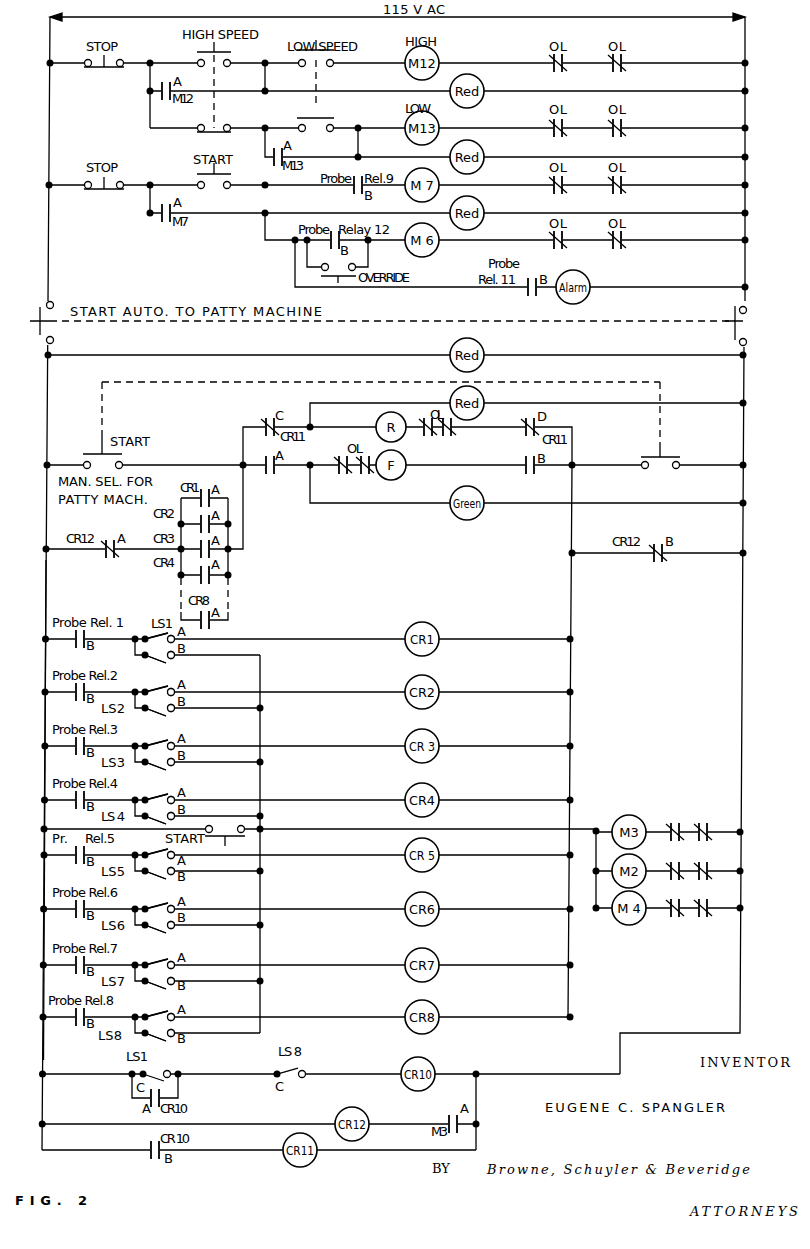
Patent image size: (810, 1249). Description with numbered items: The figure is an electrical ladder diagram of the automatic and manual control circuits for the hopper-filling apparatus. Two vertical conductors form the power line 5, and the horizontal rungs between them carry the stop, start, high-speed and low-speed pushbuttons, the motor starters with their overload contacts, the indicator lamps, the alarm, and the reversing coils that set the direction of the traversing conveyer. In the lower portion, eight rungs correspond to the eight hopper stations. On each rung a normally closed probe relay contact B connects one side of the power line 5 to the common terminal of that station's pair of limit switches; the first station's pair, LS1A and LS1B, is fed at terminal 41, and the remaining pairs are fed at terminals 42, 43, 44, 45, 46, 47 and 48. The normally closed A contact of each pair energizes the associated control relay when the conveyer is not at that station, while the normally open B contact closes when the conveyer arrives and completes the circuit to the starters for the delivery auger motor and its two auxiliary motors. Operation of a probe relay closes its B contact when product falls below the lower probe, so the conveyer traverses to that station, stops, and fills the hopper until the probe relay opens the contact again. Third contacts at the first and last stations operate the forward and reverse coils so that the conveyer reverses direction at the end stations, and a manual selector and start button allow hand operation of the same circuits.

The power line 5 is at (46, 613).
The limit switch terminal 41 is at (135, 638).
The limit switch terminal 42 is at (135, 691).
The limit switch terminal 43 is at (135, 745).
The limit switch terminal 44 is at (135, 799).
The limit switch terminal 45 is at (135, 854).
The limit switch terminal 46 is at (135, 908).
The limit switch terminal 47 is at (135, 964).
The limit switch terminal 48 is at (135, 1016).